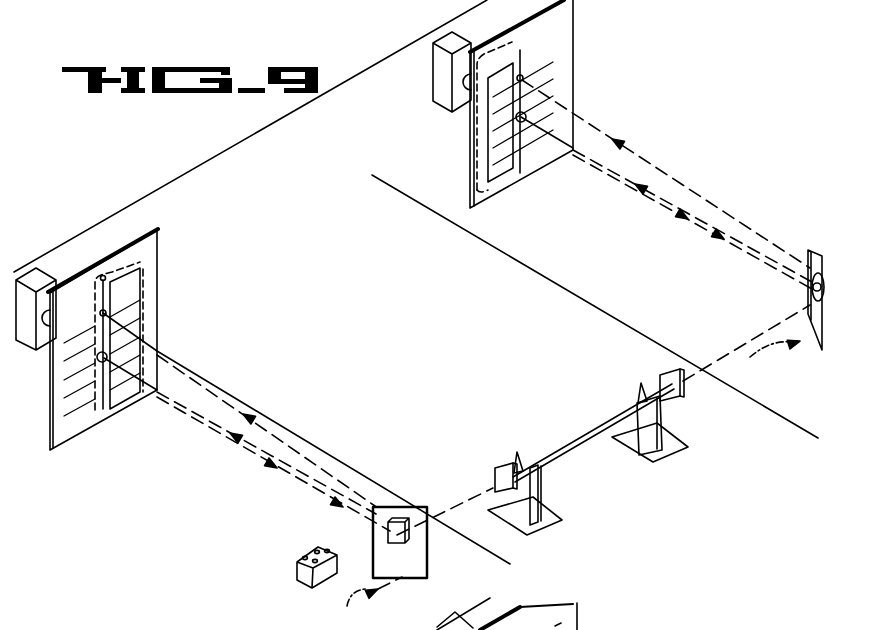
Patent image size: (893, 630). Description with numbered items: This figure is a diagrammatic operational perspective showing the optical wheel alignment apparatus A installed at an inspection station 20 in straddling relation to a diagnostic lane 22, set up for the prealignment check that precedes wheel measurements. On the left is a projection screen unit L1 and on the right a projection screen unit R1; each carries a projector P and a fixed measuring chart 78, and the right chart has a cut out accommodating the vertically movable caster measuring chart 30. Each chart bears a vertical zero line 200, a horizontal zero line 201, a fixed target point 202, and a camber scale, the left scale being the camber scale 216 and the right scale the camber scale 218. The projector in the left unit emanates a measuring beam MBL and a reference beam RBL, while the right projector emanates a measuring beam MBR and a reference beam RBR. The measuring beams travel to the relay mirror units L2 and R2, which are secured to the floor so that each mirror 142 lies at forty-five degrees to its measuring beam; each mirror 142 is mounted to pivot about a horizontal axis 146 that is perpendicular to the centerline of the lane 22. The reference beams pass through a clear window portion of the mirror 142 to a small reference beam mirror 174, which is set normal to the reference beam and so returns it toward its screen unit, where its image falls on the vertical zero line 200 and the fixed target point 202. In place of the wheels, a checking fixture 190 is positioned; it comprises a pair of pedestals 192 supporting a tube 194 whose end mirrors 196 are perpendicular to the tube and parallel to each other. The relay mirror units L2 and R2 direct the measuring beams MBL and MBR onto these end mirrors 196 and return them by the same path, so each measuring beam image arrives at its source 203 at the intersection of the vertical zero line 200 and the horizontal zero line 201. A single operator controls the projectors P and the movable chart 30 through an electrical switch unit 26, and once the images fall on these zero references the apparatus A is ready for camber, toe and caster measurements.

The inspection station 20 is at (740, 157).
The optical wheel alignment apparatus A is at (714, 76).
The diagnostic lane 22 is at (494, 247).
The projection screen unit L1 is at (160, 234).
The projection screen unit R1 is at (574, 23).
The fixed measuring chart 78 is at (159, 273).
The projector P is at (50, 265).
The camber scale 216 is at (94, 410).
The vertical zero line 200 is at (105, 409).
The horizontal zero line 201 is at (65, 376).
The fixed target point 202 is at (106, 312).
The measuring beam source 203 is at (106, 353).
The movable caster measuring chart 30 is at (494, 157).
The camber scale 218 is at (588, 128).
The reference beam RBL is at (272, 455).
The measuring beam MBL is at (278, 467).
The reference beam RBR is at (664, 198).
The measuring beam MBR is at (762, 262).
The relay mirror unit R2 is at (807, 250).
The reference beam mirror 174 is at (822, 280).
The mirror 142 is at (818, 342).
The horizontal axis 146 is at (578, 466).
The relay mirror unit L2 is at (415, 507).
The electrical switch unit 26 is at (297, 579).
The checking fixture 190 is at (605, 452).
The tube 194 is at (557, 457).
The pedestals 192 is at (532, 503).
The end mirrors 196 is at (494, 474).